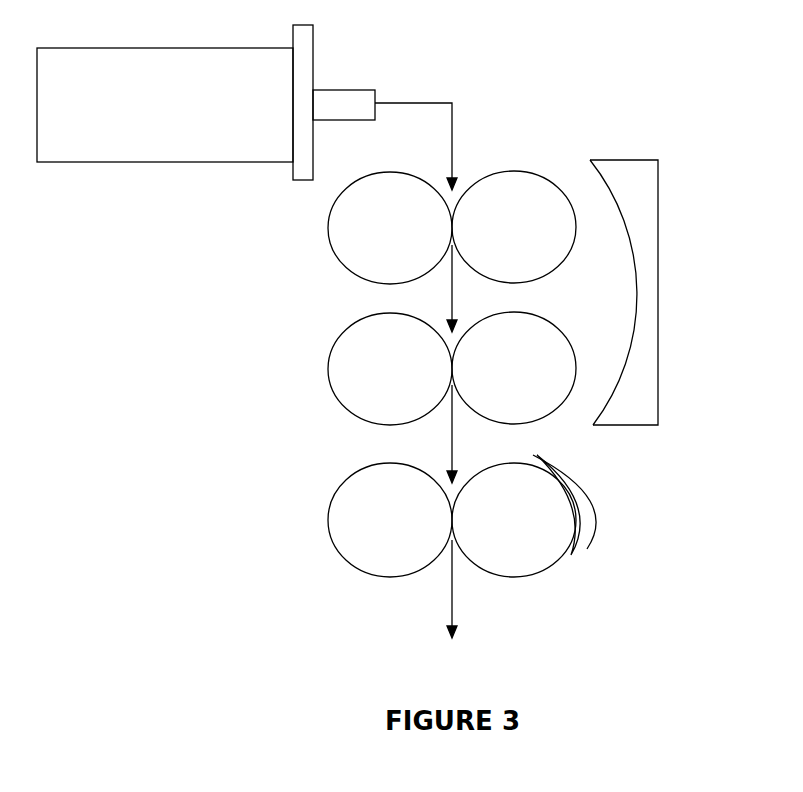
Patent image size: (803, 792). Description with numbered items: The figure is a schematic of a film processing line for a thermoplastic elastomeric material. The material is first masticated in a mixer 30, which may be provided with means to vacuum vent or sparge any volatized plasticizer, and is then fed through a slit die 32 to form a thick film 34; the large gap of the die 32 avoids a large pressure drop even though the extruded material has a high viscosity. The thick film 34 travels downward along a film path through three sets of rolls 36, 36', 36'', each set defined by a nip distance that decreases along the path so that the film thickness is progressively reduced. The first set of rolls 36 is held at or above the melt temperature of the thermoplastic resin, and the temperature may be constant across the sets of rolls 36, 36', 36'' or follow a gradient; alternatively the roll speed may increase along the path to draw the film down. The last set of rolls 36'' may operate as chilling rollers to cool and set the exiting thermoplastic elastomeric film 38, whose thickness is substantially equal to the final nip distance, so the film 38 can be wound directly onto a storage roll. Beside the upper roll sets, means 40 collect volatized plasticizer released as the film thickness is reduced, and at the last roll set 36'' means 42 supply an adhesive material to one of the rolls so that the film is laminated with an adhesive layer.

The mixer 30 is at (149, 107).
The slit die 32 is at (313, 57).
The thick film 34 is at (455, 121).
The first set of rolls 36 is at (410, 227).
The second set of rolls 36' is at (410, 368).
The last set of rolls 36'' is at (410, 520).
The thermoplastic elastomeric film 38 is at (452, 595).
The means to collect volatized plasticizer 40 is at (641, 229).
The means to supply adhesive material 42 is at (592, 498).